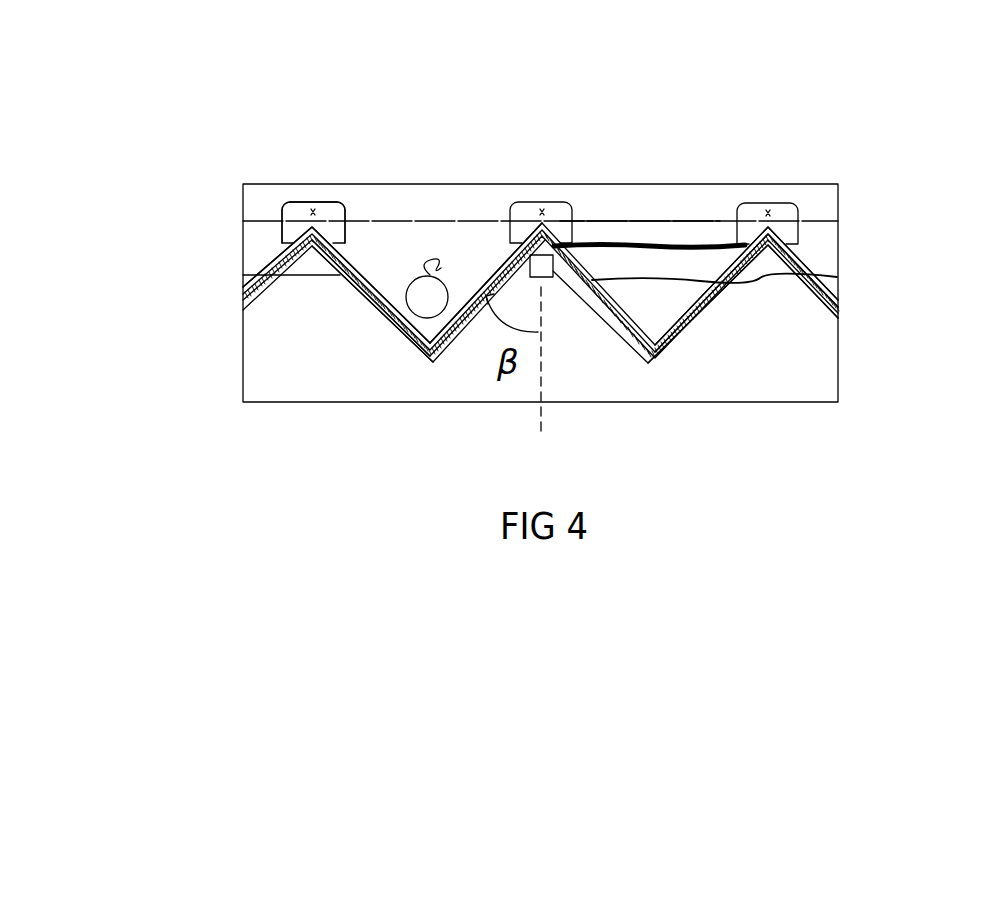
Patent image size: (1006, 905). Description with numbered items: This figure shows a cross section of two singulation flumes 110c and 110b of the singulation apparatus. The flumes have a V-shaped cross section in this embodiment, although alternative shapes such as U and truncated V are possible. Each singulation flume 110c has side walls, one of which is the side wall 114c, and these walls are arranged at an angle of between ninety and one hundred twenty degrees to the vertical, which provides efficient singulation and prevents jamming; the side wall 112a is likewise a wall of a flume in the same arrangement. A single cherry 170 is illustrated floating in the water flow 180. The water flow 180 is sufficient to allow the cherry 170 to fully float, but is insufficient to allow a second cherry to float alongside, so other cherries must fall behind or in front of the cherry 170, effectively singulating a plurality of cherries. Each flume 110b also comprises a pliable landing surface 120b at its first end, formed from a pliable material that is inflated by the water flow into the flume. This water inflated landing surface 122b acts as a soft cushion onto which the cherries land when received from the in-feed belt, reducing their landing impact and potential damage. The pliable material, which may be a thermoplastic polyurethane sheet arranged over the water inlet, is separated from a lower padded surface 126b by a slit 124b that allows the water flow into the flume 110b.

The singulation flume 110b is at (641, 232).
The singulation flume 110c is at (422, 247).
The cap element 112a is at (362, 267).
The side wall 114c is at (490, 266).
The pliable landing surface 120b is at (673, 264).
The water inflated landing surface 122b is at (708, 265).
The slit 124b is at (660, 286).
The lower padded surface 126b is at (656, 322).
The cherry 170 is at (400, 313).
The water flow 180 is at (385, 314).